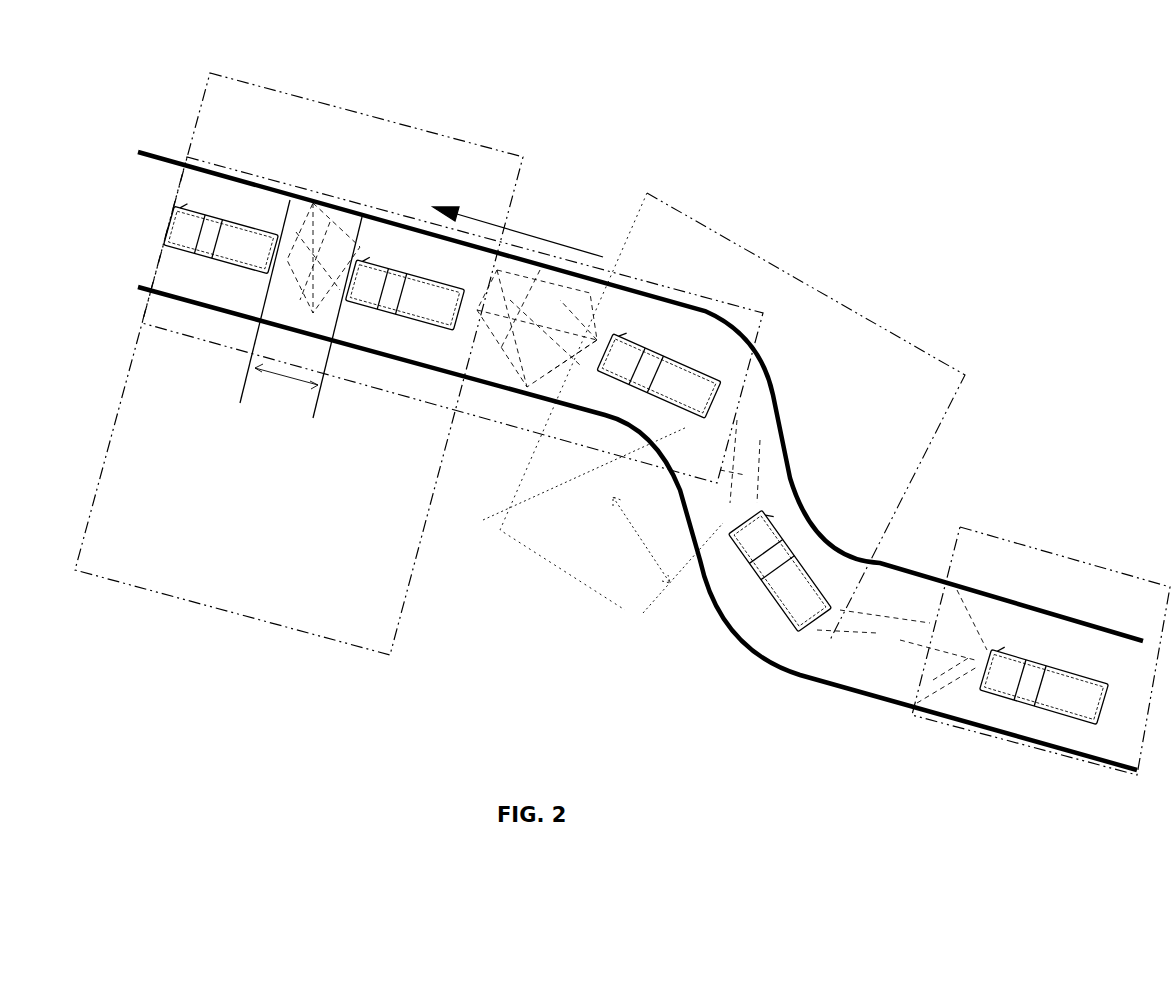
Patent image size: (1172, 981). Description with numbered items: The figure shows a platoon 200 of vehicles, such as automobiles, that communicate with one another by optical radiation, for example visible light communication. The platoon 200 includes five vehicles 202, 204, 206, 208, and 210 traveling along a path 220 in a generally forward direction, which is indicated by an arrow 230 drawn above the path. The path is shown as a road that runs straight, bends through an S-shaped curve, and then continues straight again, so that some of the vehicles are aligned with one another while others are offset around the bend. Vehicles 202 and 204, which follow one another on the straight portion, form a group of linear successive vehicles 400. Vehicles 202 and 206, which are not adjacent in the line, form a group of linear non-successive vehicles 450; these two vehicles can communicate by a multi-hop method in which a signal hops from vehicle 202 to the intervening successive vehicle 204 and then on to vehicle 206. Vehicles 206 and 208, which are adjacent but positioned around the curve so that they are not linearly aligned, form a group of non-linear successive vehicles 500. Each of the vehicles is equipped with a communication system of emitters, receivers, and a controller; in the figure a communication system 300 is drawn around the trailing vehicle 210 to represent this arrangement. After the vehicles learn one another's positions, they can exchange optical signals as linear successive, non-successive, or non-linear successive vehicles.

The platoon 200 is at (792, 146).
The vehicle 202 is at (212, 268).
The vehicle 204 is at (397, 325).
The vehicle 206 is at (647, 407).
The vehicle 208 is at (757, 587).
The vehicle 210 is at (1037, 713).
The path 220 is at (142, 163).
The arrow 230 is at (467, 196).
The communication system 300 is at (1067, 555).
The group of linear successive vehicles 400 is at (463, 140).
The group of linear non-successive vehicles 450 is at (571, 262).
The group of non-linear successive vehicles 500 is at (807, 283).